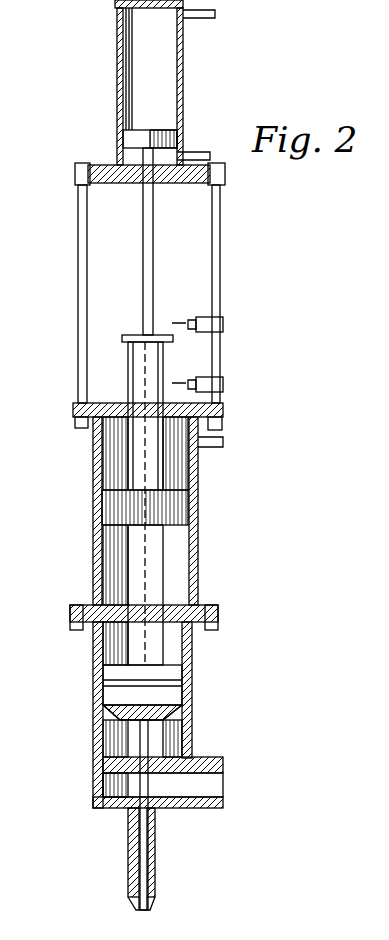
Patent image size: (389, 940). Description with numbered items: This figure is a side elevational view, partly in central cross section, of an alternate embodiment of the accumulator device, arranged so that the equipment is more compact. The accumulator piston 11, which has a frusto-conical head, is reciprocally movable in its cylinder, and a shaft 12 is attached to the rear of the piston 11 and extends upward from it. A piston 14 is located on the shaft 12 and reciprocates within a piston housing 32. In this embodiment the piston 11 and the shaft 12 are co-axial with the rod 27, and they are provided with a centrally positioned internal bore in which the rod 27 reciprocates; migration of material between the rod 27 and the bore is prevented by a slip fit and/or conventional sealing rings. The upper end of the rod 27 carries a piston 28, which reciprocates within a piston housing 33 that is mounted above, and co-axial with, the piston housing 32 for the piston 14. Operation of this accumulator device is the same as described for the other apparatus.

The piston housing 33 is at (183, 63).
The piston 28 is at (173, 142).
The piston 14 is at (180, 503).
The piston housing 32 is at (92, 570).
The shaft 12 is at (153, 655).
The piston 11 is at (112, 693).
The rod 27 is at (150, 823).